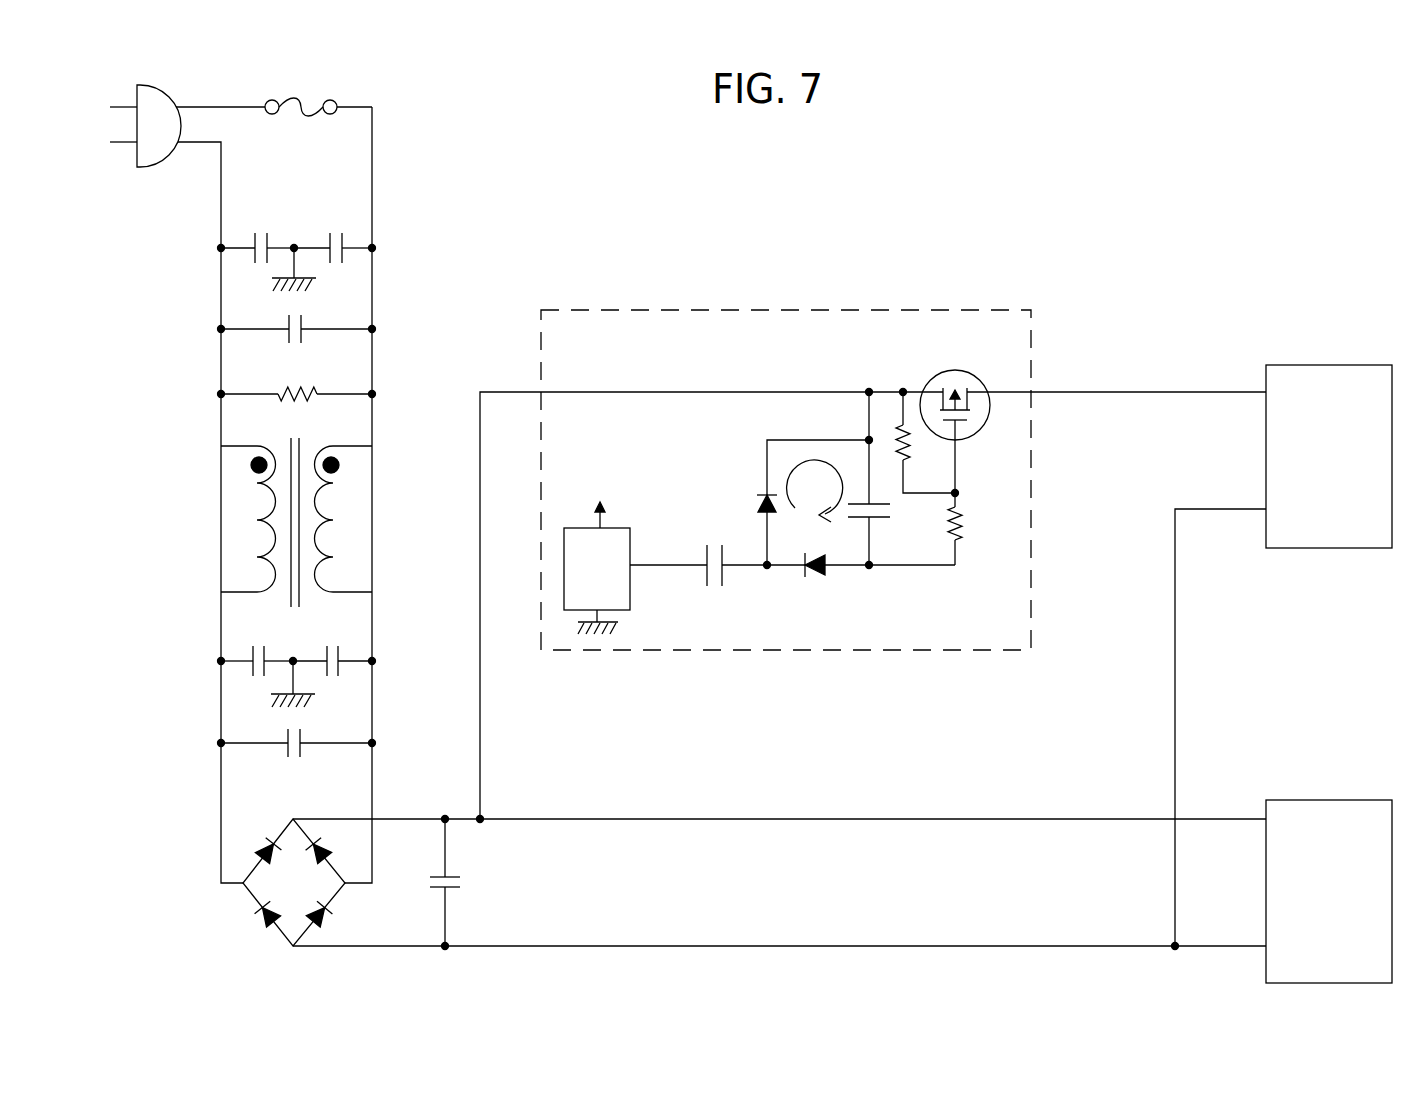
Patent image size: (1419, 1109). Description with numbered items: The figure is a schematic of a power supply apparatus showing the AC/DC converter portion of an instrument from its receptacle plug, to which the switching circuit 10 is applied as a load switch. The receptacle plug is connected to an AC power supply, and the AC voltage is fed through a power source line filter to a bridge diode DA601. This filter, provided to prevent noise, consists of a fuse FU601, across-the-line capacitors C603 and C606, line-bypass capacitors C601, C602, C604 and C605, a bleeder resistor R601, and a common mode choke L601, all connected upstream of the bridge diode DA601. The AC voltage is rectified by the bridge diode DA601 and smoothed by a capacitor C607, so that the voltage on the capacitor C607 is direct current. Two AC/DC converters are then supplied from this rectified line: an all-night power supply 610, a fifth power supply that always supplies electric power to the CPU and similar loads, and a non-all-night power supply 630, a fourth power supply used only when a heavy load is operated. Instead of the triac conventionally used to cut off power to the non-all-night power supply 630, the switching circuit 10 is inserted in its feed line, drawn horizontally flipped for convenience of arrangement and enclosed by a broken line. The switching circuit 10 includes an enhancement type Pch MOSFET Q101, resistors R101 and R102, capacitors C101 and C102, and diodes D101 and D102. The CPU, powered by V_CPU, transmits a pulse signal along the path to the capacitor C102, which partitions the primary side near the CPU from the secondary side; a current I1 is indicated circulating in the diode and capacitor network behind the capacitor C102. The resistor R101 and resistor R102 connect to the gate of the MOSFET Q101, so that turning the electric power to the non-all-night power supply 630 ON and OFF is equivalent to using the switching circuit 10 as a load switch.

The fuse FU601 is at (318, 95).
The line-bypass capacitor C601 is at (257, 233).
The line-bypass capacitor C602 is at (333, 233).
The across-the-line capacitor C603 is at (296, 343).
The bleeder resistor R601 is at (296, 410).
The common mode choke L601 is at (310, 522).
The line-bypass capacitor C604 is at (257, 646).
The line-bypass capacitor C605 is at (332, 646).
The across-the-line capacitor C606 is at (296, 758).
The bridge diode DA601 is at (271, 883).
The capacitor C607 is at (425, 882).
The switching circuit 10 is at (805, 310).
The element CPU is at (600, 556).
The capacitor C102 is at (698, 554).
The diode D101 is at (788, 502).
The diode D102 is at (861, 552).
The current I1 is at (812, 455).
The capacitor C101 is at (886, 478).
The resistor R101 is at (928, 442).
The resistor R102 is at (982, 529).
The enhancement type Pch MOSFET Q101 is at (955, 420).
The non-all-night power supply 630 is at (1287, 365).
The all-night power supply 610 is at (1287, 800).